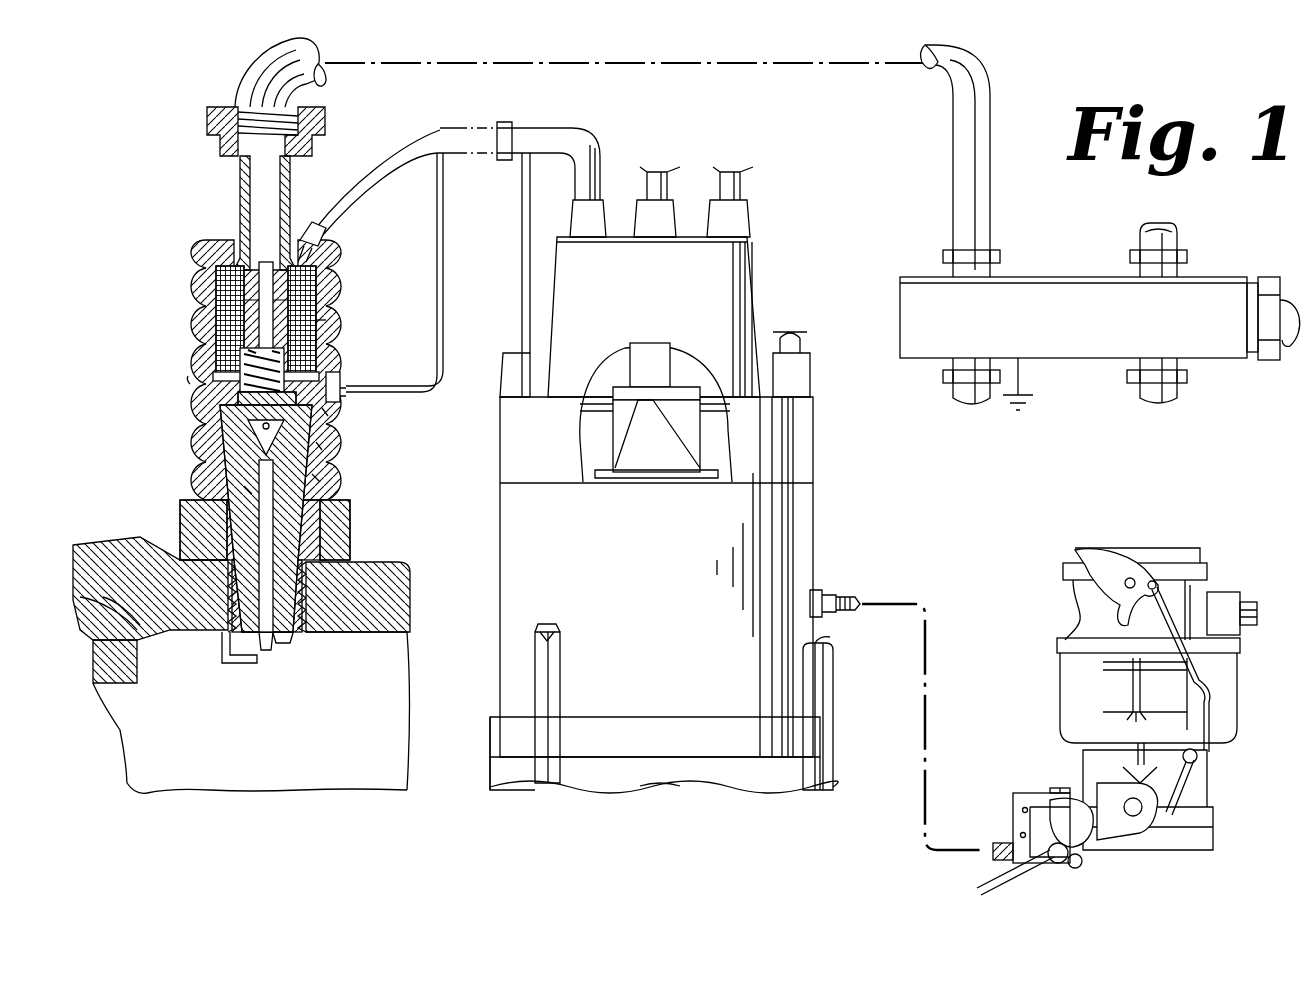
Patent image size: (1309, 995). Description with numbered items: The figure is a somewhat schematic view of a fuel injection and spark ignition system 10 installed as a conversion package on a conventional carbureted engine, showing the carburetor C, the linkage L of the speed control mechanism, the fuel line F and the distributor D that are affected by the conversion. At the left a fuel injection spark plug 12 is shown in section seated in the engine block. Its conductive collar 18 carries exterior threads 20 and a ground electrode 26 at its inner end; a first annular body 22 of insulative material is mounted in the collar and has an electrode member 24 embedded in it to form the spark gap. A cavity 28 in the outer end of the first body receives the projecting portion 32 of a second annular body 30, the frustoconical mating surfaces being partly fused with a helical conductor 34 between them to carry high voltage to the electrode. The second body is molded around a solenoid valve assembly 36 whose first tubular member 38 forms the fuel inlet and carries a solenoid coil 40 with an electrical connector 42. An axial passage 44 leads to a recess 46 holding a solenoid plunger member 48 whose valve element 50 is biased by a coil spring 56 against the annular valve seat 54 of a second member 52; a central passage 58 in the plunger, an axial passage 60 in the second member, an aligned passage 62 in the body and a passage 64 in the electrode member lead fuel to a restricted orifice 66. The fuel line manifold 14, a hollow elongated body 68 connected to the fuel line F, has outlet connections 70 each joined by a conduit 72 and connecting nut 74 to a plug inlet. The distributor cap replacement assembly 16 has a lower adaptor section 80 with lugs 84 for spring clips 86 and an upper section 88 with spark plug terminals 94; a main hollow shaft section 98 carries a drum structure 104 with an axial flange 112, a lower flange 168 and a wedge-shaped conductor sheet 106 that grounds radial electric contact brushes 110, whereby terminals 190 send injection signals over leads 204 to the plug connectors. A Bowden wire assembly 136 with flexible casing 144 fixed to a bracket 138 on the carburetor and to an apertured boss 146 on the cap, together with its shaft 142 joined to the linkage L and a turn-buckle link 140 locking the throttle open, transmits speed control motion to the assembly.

The fuel injection and spark ignition system 10 is at (162, 218).
The fuel injection spark plug 12 is at (353, 237).
The fuel line manifold 14 is at (1086, 277).
The distributor cap replacement assembly 16 is at (812, 226).
The collar 18 is at (345, 540).
The exterior threads 20 is at (312, 628).
The first annular body 22 is at (318, 478).
The electrode member 24 is at (274, 648).
The ground electrode 26 is at (246, 666).
The cavity 28 is at (258, 436).
The second annular body 30 is at (330, 297).
The projecting portion 32 is at (326, 412).
The conductor 34 is at (190, 384).
The solenoid valve assembly 36 is at (328, 335).
The first tubular member 38 is at (290, 176).
The solenoid coil 40 is at (334, 263).
The electrical connector 42 is at (316, 228).
The axial passage 44 is at (205, 312).
The recess 46 is at (333, 317).
The solenoid plunger member 48 is at (258, 388).
The valve element 50 is at (250, 490).
The second member 52 is at (338, 358).
The annular valve seat 54 is at (320, 446).
The coil spring 56 is at (200, 353).
The central passage 58 is at (256, 404).
The axial passage 60 is at (208, 499).
The aligned passage 62 is at (262, 522).
The passage 64 is at (235, 600).
The restricted orifice 66 is at (276, 652).
The hollow elongated body 68 is at (1055, 347).
The outlet connections 70 is at (943, 257).
The conduit 72 is at (992, 190).
The connecting nut 74 is at (318, 110).
The lower adaptor section 80 is at (520, 546).
The lugs 84 is at (560, 686).
The spring clips 86 is at (540, 688).
The upper section 88 is at (755, 290).
The spark plug terminals 94 is at (714, 228).
The main hollow shaft section 98 is at (655, 348).
The drum structure 104 is at (686, 390).
The conductor sheet 106 is at (656, 455).
The electric contact brushes 110 is at (596, 412).
The axial flange 112 is at (630, 356).
The Bowden wire assembly 136 is at (994, 859).
The bracket 138 is at (1020, 793).
The turn-buckle link 140 is at (1015, 806).
The shaft 142 is at (1048, 858).
The flexible casing 144 is at (1015, 830).
The apertured boss 146 is at (822, 592).
The lower flange 168 is at (590, 483).
The terminal 190 is at (505, 382).
The lead 204 is at (397, 152).
The carburetor C is at (1062, 683).
The distributor D is at (665, 780).
The fuel line F is at (1273, 343).
The linkage L is at (992, 880).